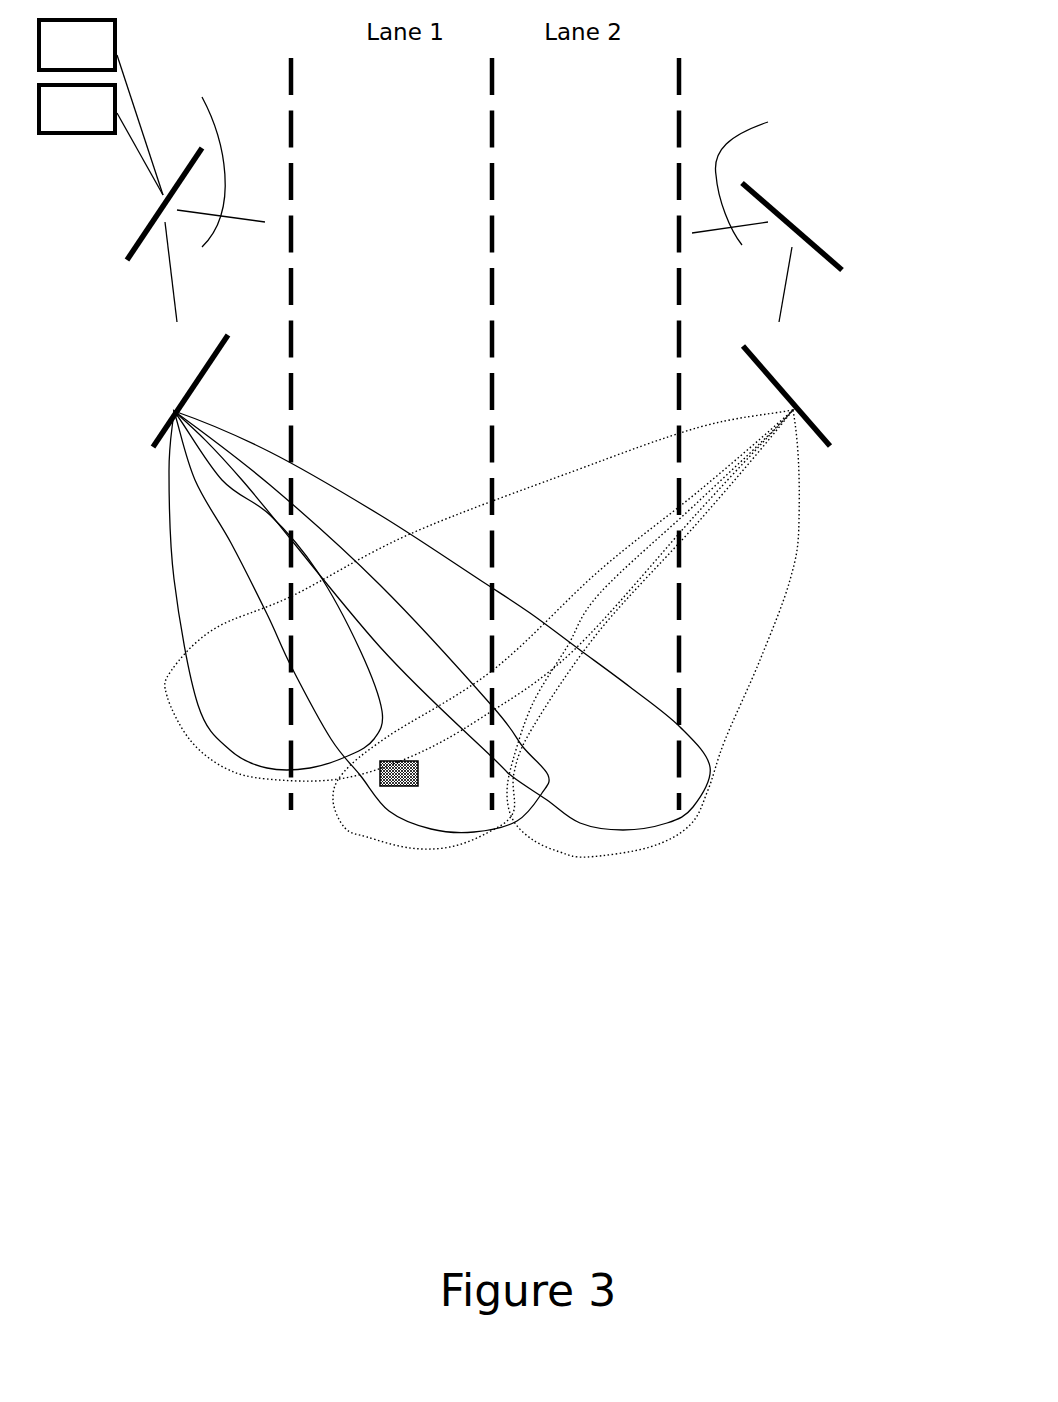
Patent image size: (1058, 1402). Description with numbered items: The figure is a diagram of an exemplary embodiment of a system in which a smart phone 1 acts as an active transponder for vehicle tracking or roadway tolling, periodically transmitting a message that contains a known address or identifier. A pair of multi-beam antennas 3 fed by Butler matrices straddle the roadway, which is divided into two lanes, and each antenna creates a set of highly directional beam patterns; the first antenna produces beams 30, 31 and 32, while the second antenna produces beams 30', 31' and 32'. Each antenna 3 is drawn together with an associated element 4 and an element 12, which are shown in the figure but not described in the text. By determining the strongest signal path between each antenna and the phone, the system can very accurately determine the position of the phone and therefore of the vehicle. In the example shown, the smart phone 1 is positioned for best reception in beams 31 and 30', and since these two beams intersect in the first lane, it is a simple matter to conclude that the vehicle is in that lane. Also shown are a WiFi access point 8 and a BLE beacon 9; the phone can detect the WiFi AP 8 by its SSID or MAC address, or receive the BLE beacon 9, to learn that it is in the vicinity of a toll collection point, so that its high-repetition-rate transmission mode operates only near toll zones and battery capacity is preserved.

The smart phone 1 is at (418, 772).
The multi-beam antenna 3 is at (200, 372).
The mirror 4 is at (163, 196).
The WiFi AP 8 is at (77, 45).
The BLE beacon 9 is at (77, 109).
The lens 12 is at (476, 166).
The beam pattern 30 is at (200, 590).
The beam pattern 30' is at (409, 595).
The beam pattern 31 is at (361, 698).
The beam pattern 31' is at (479, 631).
The beam pattern 32 is at (442, 711).
The beam pattern 32' is at (718, 633).